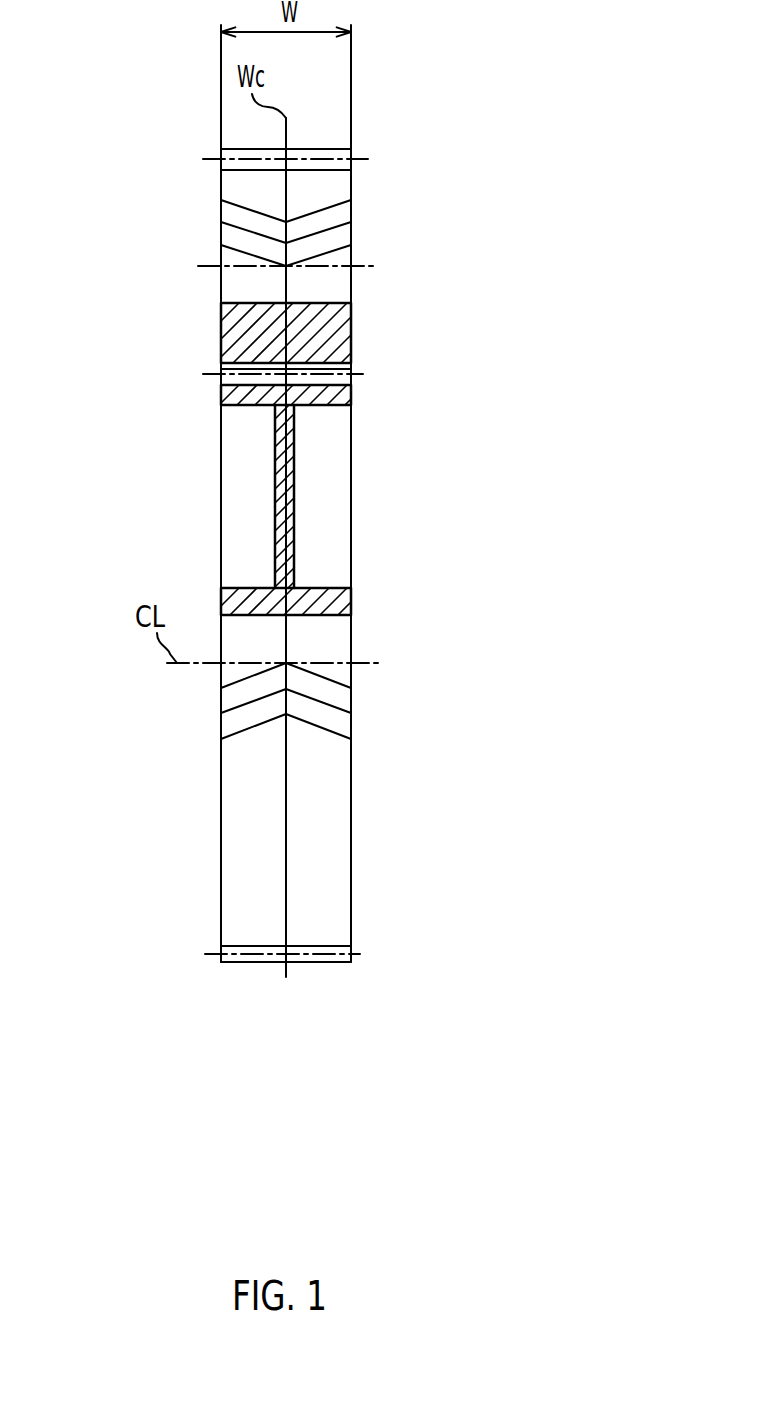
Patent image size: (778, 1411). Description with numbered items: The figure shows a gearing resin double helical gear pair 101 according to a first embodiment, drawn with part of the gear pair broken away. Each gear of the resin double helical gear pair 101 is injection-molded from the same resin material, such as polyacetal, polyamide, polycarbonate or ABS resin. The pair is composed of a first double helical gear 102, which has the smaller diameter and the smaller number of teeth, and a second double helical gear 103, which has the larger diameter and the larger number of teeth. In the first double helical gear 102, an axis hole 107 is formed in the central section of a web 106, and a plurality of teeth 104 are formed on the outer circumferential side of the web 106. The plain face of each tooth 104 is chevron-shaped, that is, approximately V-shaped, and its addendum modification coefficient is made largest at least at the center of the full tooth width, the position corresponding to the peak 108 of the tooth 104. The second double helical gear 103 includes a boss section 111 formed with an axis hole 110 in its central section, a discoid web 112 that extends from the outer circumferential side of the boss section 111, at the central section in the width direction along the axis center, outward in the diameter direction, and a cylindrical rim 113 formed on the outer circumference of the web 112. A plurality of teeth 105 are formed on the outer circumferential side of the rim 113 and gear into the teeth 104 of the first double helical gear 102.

The resin double helical gear pair 101 is at (364, 134).
The first double helical gear 102 is at (203, 164).
The second double helical gear 103 is at (214, 895).
The tooth 104 is at (307, 148).
The tooth 105 is at (332, 732).
The web 106 is at (343, 328).
The axis hole 107 is at (235, 303).
The peak 108 is at (221, 202).
The axis hole 110 is at (332, 615).
The boss section 111 is at (332, 582).
The web 112 is at (297, 490).
The rim 113 is at (330, 397).